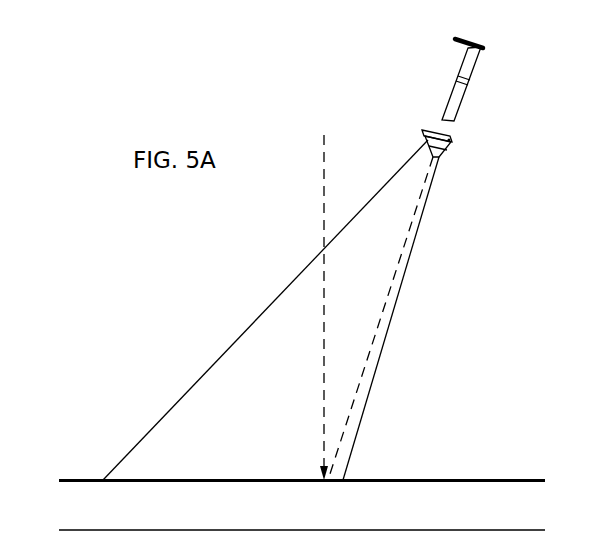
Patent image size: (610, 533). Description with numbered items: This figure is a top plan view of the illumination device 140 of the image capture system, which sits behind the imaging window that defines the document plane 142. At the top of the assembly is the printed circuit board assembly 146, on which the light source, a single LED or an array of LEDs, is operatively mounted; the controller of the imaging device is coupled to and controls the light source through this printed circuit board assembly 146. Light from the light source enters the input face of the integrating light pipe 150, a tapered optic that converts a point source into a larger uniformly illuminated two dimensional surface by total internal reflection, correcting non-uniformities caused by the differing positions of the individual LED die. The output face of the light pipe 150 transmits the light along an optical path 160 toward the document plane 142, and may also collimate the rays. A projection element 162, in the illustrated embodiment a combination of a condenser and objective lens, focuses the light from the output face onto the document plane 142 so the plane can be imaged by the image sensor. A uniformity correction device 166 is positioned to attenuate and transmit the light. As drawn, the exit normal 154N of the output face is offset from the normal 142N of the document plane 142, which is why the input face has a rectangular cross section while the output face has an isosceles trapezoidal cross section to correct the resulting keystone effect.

The illumination device 140 is at (380, 97).
The document plane 142 is at (430, 478).
The normal of document plane 142N is at (324, 212).
The printed circuit board assembly 146 is at (479, 37).
The integrating light pipe 150 is at (463, 97).
The exit normal of output face 154N is at (387, 303).
The optical path 160 is at (412, 248).
The projection element 162 is at (452, 147).
The uniformity correction device 166 is at (451, 132).